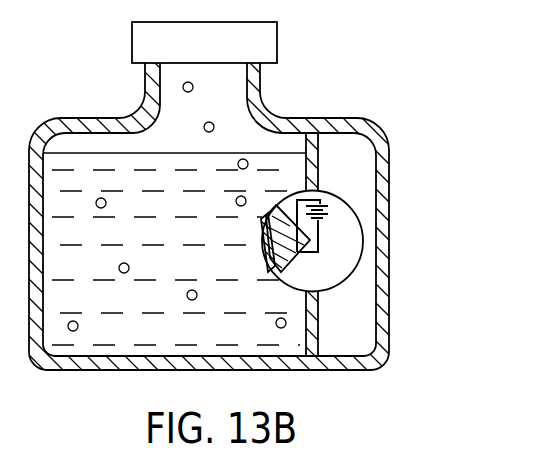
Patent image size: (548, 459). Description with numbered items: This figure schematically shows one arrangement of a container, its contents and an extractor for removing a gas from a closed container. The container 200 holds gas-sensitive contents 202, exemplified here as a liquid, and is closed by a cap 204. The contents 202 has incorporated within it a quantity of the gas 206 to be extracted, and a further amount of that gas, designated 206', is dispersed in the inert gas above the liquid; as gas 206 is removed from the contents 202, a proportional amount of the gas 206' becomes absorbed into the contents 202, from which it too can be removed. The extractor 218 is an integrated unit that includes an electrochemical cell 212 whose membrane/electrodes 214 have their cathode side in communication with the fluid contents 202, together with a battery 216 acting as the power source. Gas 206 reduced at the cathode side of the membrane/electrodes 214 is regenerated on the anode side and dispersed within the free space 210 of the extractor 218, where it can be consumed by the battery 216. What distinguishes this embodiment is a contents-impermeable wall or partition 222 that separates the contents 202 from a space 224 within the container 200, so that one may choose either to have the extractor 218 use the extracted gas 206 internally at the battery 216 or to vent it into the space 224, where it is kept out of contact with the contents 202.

The container 200 is at (377, 128).
The contents 202 is at (260, 160).
The cap 204 is at (270, 38).
The gas 206 is at (177, 263).
The gas dispersed in inert gas 206' is at (114, 83).
The free space 210 is at (349, 247).
The electrochemical cell 212 is at (290, 258).
The membrane/electrodes 214 is at (271, 221).
The battery 216 is at (322, 212).
The extractor 218 is at (344, 282).
The partition 222 is at (321, 320).
The space 224 is at (361, 322).